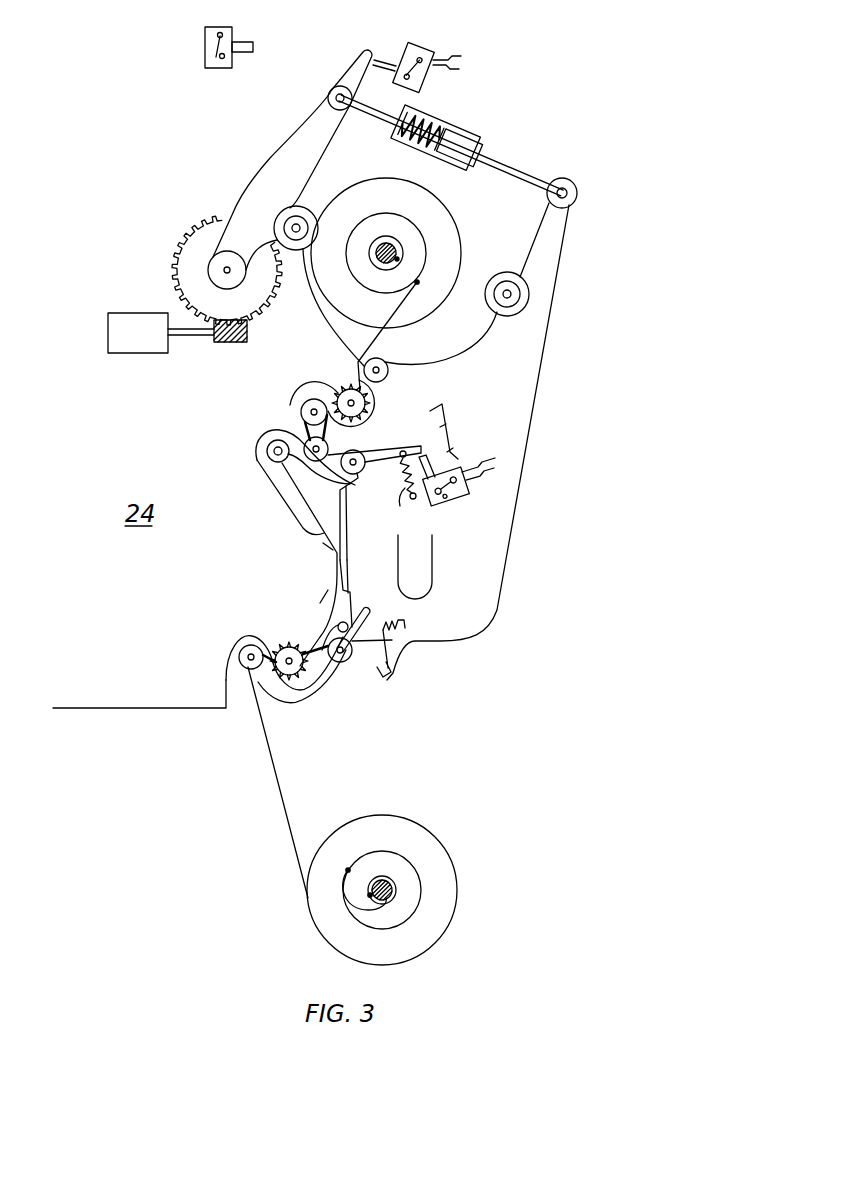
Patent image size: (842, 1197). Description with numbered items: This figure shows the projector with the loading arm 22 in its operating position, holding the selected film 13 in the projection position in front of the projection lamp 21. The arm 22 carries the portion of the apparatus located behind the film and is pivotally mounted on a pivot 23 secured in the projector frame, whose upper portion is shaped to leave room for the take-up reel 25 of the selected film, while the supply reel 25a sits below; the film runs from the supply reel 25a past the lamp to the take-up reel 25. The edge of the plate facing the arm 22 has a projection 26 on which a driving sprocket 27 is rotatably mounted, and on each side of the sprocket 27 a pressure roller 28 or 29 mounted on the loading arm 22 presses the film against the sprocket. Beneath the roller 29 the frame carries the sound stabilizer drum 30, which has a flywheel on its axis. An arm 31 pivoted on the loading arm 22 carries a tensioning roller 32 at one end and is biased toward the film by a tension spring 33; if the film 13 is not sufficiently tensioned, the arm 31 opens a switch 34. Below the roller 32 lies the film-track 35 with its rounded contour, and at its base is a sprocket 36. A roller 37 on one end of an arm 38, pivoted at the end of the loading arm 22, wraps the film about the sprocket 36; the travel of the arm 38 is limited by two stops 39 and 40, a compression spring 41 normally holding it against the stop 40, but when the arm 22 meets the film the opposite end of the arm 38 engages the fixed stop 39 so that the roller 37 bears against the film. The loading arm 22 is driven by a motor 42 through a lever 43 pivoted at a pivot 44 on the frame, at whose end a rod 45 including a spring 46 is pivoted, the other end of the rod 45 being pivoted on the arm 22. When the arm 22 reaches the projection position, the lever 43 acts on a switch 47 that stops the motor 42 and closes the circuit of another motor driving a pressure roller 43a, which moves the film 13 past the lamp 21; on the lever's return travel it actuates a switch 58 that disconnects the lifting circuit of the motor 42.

The film 13 is at (284, 799).
The projection lamp 21 is at (435, 575).
The loading arm 22 is at (538, 404).
The pivot 23 is at (522, 294).
The take-up reel 25 is at (456, 236).
The supply reel 25a is at (416, 842).
The projection 26 is at (344, 352).
The driving sprocket 27 is at (365, 409).
The pressure roller 28 is at (388, 373).
The pressure roller 29 is at (304, 404).
The sound stabilizer drum 30 is at (323, 451).
The arm 31 is at (384, 466).
The tensioning roller 32 is at (274, 447).
The tension spring 33 is at (410, 498).
The switch 34 is at (456, 499).
The film-track 35 is at (330, 573).
The sprocket 36 is at (285, 647).
The roller 37 is at (239, 659).
The arm 38 is at (316, 693).
The stop 39 is at (338, 625).
The stop 40 is at (388, 673).
The compression spring 41 is at (381, 618).
The motor 42 is at (133, 312).
The lever 43 is at (282, 150).
The pressure roller 43a is at (310, 232).
The pivot 44 is at (222, 262).
The rod 45 is at (505, 164).
The spring 46 is at (441, 120).
The switch 47 is at (426, 48).
The switch 58 is at (218, 70).